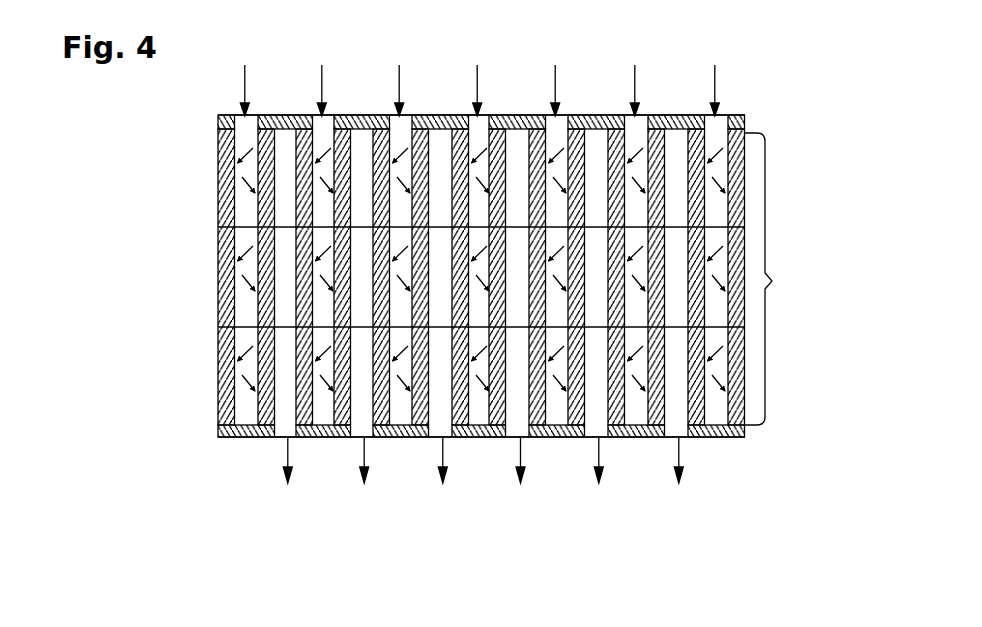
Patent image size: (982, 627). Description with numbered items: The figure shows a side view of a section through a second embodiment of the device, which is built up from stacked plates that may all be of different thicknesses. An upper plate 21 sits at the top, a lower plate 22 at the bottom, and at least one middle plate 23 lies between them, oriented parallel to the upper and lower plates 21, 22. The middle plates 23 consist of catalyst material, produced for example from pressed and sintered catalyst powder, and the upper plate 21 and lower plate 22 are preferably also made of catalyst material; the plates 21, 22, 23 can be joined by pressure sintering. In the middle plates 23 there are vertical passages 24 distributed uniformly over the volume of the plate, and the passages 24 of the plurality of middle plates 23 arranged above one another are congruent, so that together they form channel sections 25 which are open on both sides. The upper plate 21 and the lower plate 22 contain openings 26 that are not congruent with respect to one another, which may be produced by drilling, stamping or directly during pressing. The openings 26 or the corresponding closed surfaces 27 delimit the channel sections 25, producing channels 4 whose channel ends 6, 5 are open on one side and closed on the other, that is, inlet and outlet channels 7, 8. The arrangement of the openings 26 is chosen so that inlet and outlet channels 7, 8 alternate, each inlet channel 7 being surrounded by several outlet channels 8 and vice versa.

The channels 4 is at (673, 143).
The channel end 5 is at (330, 437).
The channel end 6 is at (723, 123).
The inlet channel 7 is at (480, 135).
The outlet channel 8 is at (438, 417).
The upper plate 21 is at (218, 125).
The lower plate 22 is at (218, 434).
The middle plate 23 is at (218, 180).
The vertical passages 24 is at (518, 143).
The channel sections 25 is at (772, 281).
The openings 26 is at (328, 117).
The closed surfaces 27 is at (282, 115).